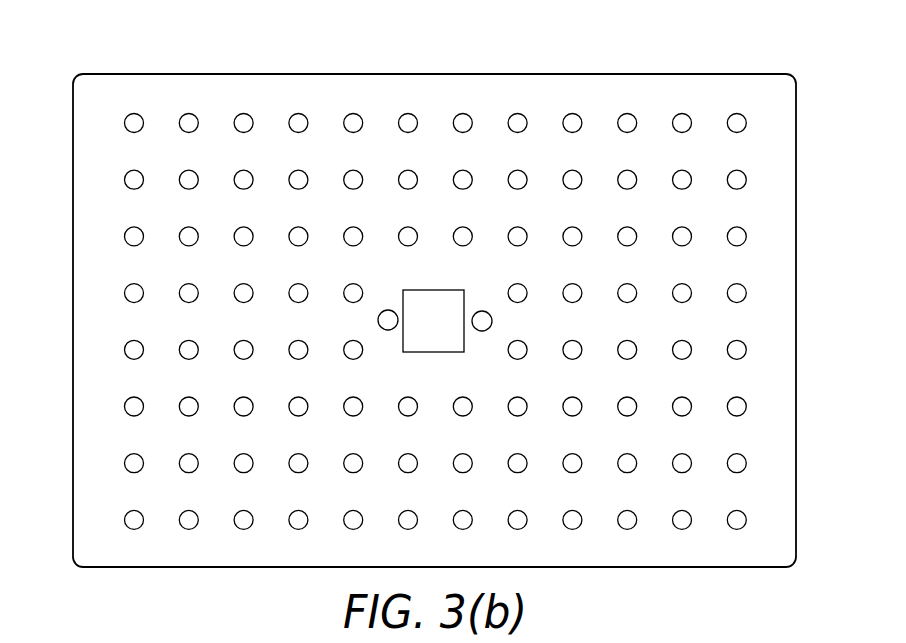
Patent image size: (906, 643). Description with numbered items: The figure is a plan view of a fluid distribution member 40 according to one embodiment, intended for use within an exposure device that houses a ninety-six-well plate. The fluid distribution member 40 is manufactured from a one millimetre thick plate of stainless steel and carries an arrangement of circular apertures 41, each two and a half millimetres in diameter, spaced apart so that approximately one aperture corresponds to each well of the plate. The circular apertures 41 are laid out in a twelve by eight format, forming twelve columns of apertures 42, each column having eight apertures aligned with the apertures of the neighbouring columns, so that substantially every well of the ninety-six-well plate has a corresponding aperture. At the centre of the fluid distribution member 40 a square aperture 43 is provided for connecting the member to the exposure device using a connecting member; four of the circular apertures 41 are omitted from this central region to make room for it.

The fluid distribution member 40 is at (110, 94).
The circular apertures 41 is at (128, 182).
The columns of apertures 42 is at (626, 67).
The square aperture 43 is at (430, 303).